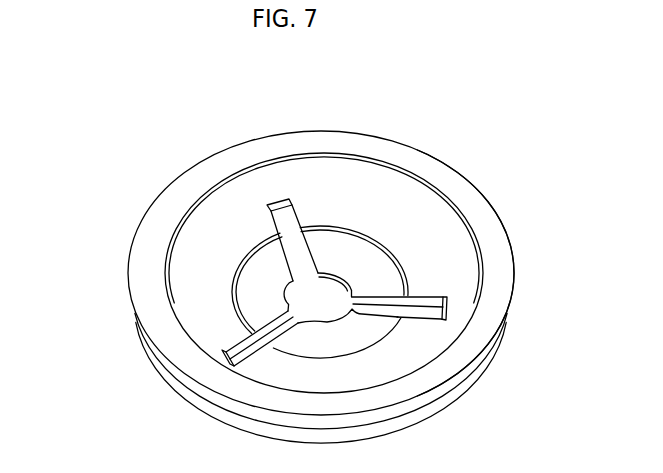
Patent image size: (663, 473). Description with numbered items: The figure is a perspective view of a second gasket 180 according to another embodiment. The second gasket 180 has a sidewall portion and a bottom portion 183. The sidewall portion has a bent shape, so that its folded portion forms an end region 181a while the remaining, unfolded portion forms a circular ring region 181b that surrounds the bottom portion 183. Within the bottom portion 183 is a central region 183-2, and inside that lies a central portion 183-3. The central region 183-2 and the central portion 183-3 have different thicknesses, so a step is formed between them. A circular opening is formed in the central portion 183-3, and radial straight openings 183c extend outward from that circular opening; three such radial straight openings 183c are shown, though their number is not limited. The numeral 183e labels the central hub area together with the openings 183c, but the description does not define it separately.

The second gasket 180 is at (137, 140).
The end region 181a is at (506, 260).
The circular ring region 181b is at (425, 417).
The bottom portion 183 is at (428, 223).
The central region 183-2 is at (192, 258).
The central portion 183-3 is at (250, 300).
The radial straight openings 183c is at (312, 290).
The central boss 183e is at (310, 293).